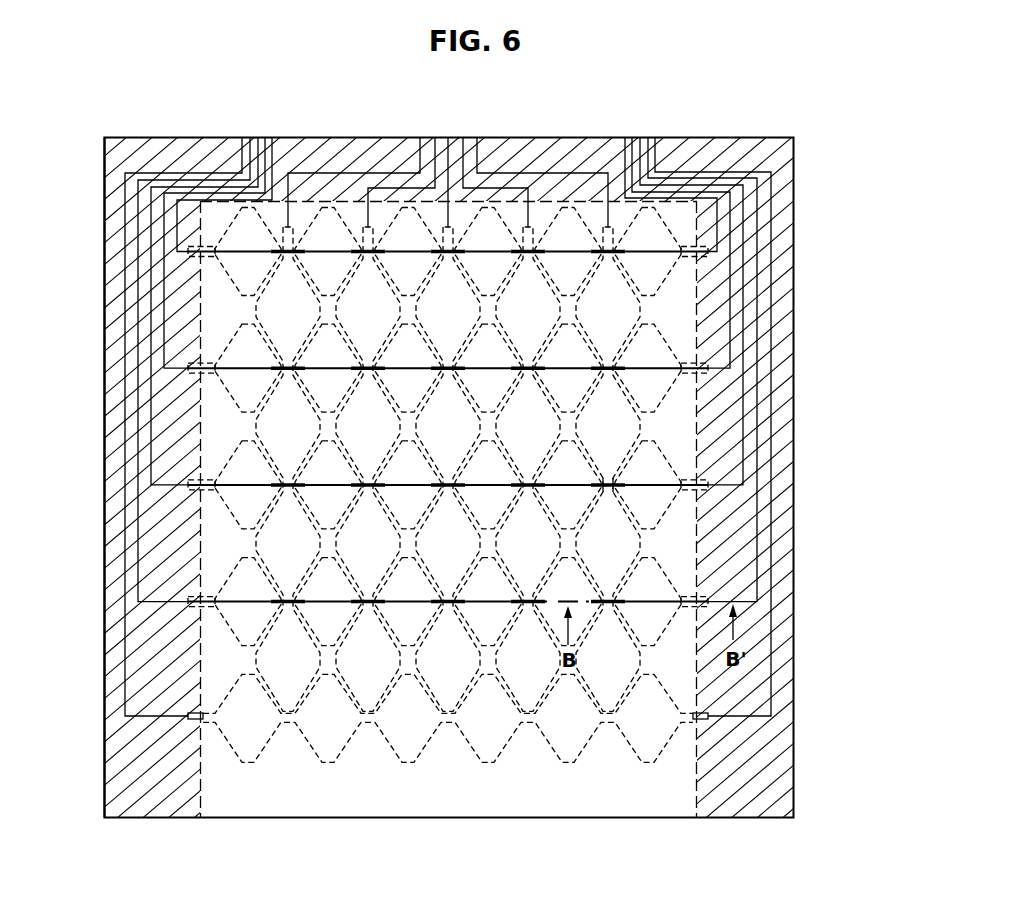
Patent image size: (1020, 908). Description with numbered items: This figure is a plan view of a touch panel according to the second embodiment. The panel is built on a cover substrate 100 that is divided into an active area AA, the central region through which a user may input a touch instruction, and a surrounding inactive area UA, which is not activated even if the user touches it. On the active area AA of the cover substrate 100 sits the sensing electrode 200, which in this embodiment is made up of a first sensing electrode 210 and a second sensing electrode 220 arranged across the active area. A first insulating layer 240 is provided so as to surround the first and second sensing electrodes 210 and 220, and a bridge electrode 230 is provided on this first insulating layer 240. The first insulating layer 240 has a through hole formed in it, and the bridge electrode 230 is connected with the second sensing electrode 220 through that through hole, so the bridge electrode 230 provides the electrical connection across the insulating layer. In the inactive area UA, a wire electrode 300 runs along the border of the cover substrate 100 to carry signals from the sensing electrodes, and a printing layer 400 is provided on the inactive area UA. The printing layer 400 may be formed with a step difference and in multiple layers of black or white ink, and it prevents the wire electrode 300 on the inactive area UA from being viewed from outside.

The cover substrate 100 is at (794, 756).
The sensing electrode 200 is at (549, 485).
The first sensing electrode 210 is at (662, 498).
The second sensing electrode 220 is at (623, 660).
The bridge electrode 230 is at (607, 482).
The first insulating layer 240 is at (645, 794).
The wire electrode 300 is at (538, 174).
The printing layer 400 is at (787, 798).
The active area AA is at (222, 807).
The inactive area UA is at (124, 760).